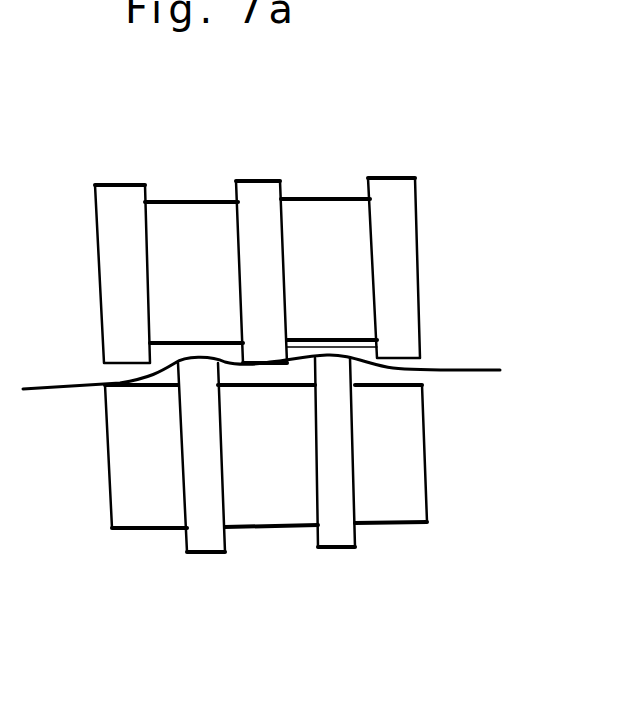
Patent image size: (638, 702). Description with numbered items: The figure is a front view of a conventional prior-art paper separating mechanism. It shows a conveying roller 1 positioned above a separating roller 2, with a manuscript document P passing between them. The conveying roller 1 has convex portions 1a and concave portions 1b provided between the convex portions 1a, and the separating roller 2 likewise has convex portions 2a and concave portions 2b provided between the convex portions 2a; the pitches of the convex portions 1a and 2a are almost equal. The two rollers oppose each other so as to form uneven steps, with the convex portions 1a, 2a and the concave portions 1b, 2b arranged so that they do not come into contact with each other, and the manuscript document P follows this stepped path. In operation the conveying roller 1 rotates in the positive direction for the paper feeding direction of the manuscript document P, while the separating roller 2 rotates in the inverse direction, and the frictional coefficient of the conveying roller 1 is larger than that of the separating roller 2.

The conveying roller 1 is at (293, 233).
The convex portions 1a is at (118, 183).
The concave portions 1b is at (188, 200).
The manuscript document P is at (460, 365).
The separating roller 2 is at (302, 487).
The convex portions 2a is at (205, 553).
The concave portions 2b is at (263, 535).